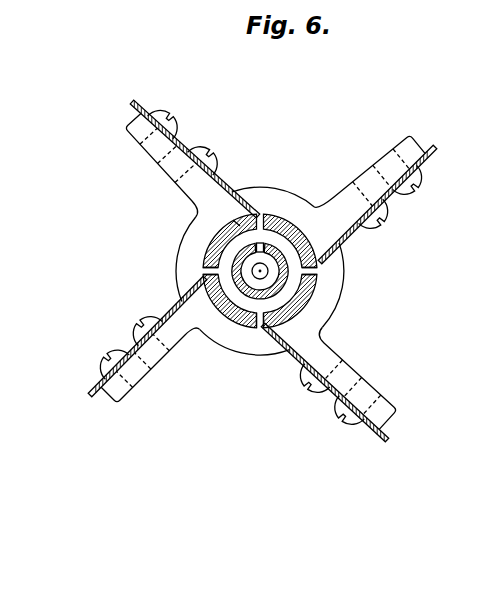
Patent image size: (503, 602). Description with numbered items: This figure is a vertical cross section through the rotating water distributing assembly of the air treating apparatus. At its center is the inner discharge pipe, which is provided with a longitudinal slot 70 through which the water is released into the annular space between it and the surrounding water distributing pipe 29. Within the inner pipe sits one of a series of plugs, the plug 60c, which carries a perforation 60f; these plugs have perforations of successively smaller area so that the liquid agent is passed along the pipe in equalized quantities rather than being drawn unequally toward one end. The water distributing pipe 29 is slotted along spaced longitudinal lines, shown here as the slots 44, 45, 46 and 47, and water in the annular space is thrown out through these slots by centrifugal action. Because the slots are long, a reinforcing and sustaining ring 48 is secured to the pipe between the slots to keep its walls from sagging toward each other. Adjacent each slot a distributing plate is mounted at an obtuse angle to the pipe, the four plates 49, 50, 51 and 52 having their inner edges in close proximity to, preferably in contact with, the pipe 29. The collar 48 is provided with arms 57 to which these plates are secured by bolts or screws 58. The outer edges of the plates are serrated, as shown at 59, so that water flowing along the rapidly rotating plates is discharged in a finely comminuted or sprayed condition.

The water distributing pipe 29 is at (282, 216).
The longitudinal slot 44 is at (260, 242).
The longitudinal slot 45 is at (320, 270).
The longitudinal slot 46 is at (260, 330).
The longitudinal slot 47 is at (204, 271).
The reinforcing and sustaining ring 48 is at (338, 308).
The distributing plate 49 is at (181, 144).
The distributing plate 50 is at (390, 220).
The distributing plate 51 is at (333, 397).
The distributing plate 52 is at (133, 342).
The arm 57 is at (132, 128).
The bolt or screw 58 is at (168, 115).
The serrated edge 59 is at (135, 101).
The plug 60c is at (262, 268).
The perforation 60f is at (247, 277).
The longitudinal slot 70 is at (233, 220).